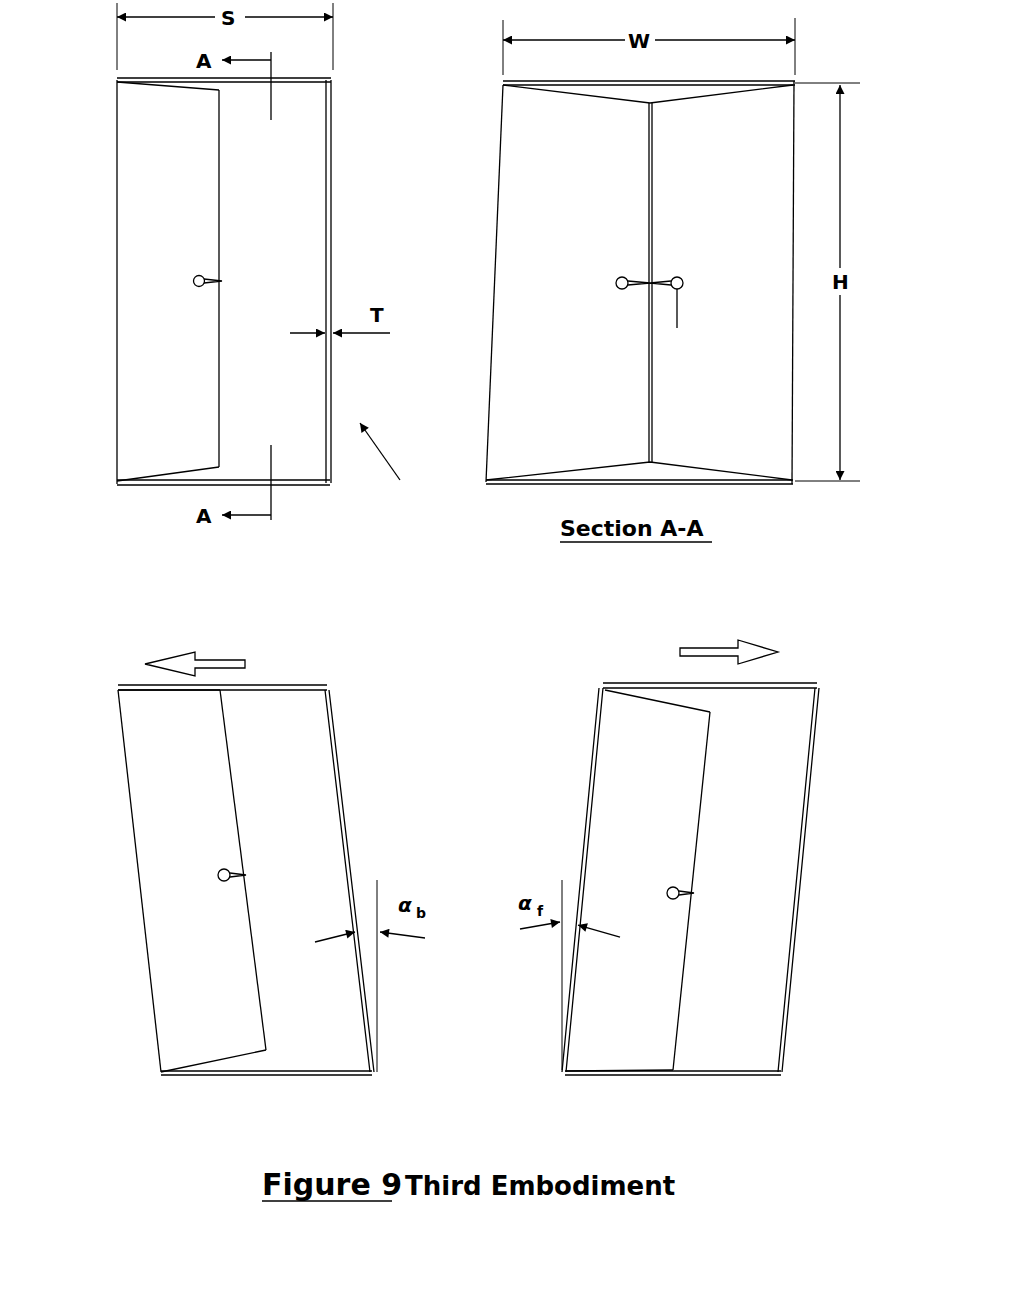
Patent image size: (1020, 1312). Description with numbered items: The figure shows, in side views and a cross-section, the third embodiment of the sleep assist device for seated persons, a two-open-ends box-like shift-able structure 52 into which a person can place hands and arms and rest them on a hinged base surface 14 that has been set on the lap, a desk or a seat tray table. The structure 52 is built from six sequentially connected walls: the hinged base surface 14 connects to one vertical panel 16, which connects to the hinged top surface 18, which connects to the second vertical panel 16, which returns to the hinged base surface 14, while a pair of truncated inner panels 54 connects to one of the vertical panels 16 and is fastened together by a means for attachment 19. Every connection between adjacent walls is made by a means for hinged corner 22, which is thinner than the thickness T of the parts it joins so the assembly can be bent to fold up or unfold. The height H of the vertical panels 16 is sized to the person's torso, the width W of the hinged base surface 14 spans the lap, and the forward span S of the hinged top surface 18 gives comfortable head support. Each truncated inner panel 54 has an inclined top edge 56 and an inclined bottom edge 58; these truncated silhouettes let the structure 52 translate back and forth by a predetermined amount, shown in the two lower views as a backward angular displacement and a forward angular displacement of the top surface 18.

The hinged base surface 14 is at (195, 486).
The vertical panel 16 is at (331, 258).
The hinged top surface 18 is at (575, 83).
The means for attachment 19 is at (617, 288).
The means for hinged corner 22 is at (117, 80).
The two-open-ends box-like shift-able structure 52 is at (426, 500).
The truncated inner panel 54 is at (557, 243).
The inclined top edge 56 is at (210, 92).
The inclined bottom edge 58 is at (205, 465).